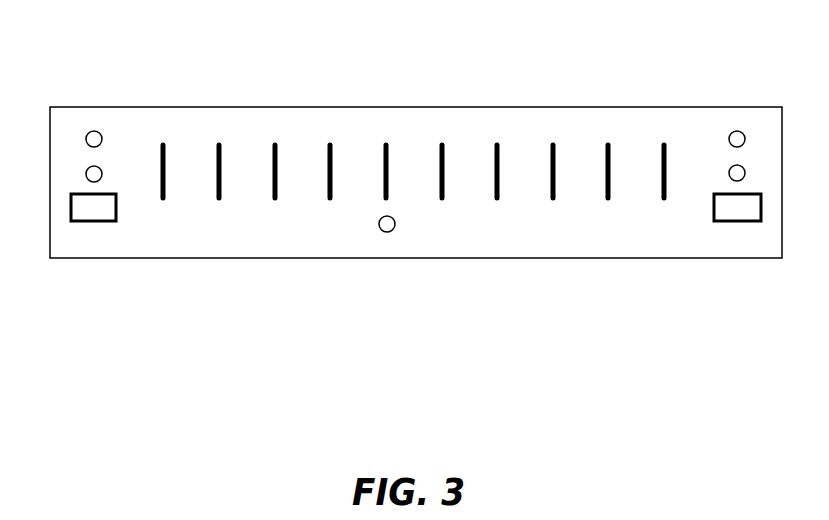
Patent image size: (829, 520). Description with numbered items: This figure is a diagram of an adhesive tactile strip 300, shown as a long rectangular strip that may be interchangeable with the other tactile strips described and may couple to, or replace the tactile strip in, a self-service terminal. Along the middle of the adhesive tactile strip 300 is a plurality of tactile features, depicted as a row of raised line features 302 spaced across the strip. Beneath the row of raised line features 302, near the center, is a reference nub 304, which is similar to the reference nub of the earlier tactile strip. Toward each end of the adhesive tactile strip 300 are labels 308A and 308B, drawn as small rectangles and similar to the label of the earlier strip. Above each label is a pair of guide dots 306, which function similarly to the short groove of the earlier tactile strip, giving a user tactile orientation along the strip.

The adhesive tactile strip 300 is at (628, 45).
The raised line feature 302 is at (166, 143).
The reference nub 304 is at (389, 232).
The guide dot 306 is at (96, 131).
The label 308A is at (100, 222).
The label 308B is at (725, 222).